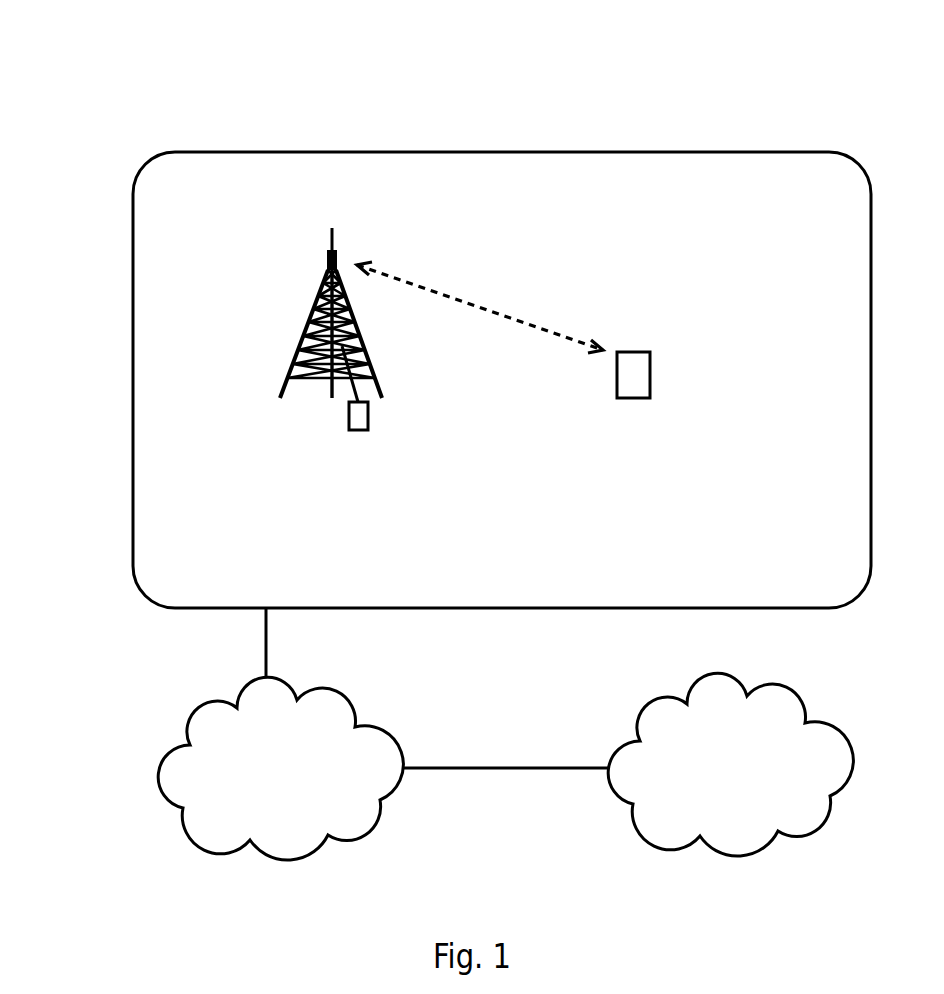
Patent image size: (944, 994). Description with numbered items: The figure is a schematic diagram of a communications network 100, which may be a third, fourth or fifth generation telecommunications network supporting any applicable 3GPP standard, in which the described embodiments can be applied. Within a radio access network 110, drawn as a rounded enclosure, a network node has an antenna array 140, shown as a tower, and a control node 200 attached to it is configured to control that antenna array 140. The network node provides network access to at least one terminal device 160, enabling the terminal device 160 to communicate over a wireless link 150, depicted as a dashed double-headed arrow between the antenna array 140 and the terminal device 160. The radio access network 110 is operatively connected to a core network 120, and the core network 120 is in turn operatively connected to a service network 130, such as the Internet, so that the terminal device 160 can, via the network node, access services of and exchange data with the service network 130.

The communications network 100 is at (212, 86).
The radio access network 110 is at (133, 433).
The core network 120 is at (280, 734).
The service network 130 is at (627, 764).
The antenna array 140 is at (330, 249).
The wireless link 150 is at (468, 302).
The terminal device 160 is at (640, 400).
The control node 200 is at (349, 421).